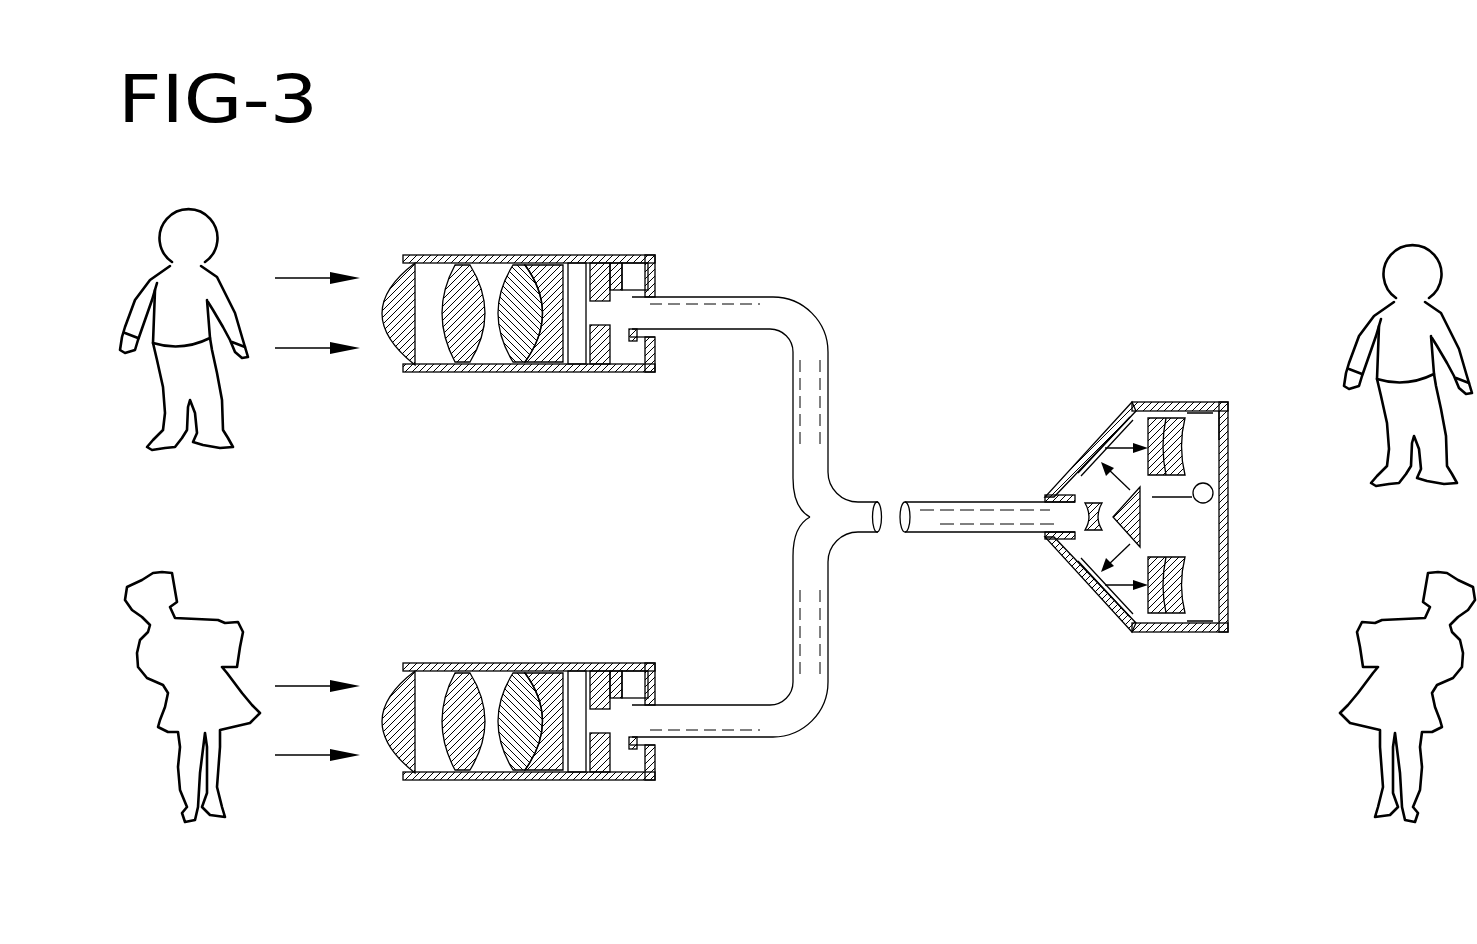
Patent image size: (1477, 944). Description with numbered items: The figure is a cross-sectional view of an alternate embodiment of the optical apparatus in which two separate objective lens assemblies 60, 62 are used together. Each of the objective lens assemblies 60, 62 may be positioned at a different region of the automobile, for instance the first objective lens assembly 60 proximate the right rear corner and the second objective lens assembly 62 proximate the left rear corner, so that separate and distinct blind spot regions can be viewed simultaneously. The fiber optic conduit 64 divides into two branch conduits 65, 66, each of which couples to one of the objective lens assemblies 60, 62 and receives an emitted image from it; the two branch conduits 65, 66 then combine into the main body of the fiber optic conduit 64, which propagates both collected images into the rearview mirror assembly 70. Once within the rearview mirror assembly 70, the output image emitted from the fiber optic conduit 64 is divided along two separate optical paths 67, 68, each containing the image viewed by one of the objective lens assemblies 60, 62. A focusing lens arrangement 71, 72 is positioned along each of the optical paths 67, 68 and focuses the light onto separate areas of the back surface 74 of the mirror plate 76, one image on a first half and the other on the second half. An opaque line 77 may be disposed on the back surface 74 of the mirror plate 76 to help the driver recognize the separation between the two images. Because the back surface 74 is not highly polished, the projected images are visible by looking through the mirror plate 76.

The first objective lens assembly 60 is at (553, 246).
The second objective lens assembly 62 is at (553, 654).
The fiber optic conduit 64 is at (972, 500).
The first branch conduit 65 is at (706, 296).
The second branch conduit 66 is at (698, 704).
The first optical path 67 is at (1118, 486).
The second optical path 68 is at (1118, 548).
The rearview mirror assembly 70 is at (1177, 380).
The first focusing lens arrangement 71 is at (1185, 447).
The second focusing lens arrangement 72 is at (1185, 582).
The back surface 74 is at (1213, 496).
The mirror plate 76 is at (1220, 425).
The opaque line 77 is at (1230, 553).